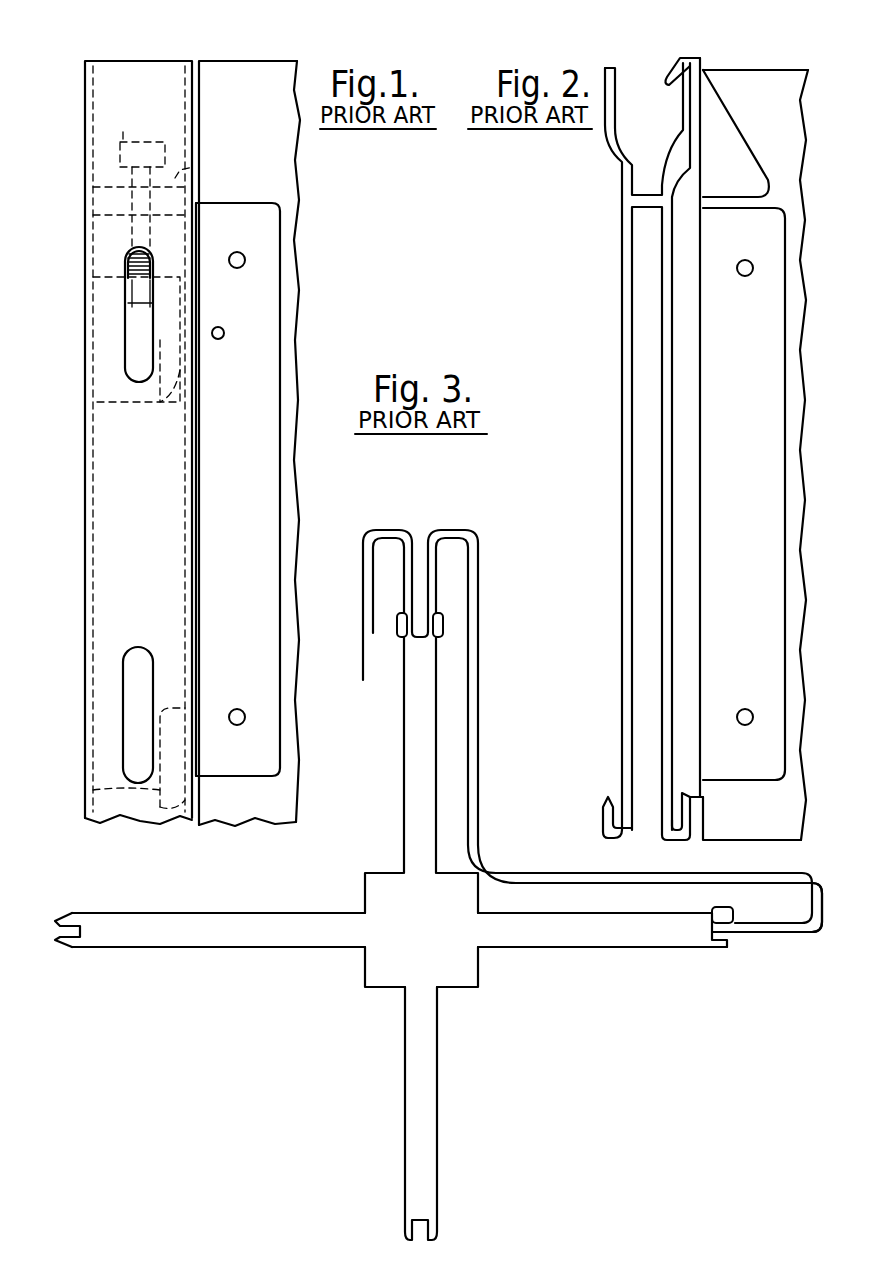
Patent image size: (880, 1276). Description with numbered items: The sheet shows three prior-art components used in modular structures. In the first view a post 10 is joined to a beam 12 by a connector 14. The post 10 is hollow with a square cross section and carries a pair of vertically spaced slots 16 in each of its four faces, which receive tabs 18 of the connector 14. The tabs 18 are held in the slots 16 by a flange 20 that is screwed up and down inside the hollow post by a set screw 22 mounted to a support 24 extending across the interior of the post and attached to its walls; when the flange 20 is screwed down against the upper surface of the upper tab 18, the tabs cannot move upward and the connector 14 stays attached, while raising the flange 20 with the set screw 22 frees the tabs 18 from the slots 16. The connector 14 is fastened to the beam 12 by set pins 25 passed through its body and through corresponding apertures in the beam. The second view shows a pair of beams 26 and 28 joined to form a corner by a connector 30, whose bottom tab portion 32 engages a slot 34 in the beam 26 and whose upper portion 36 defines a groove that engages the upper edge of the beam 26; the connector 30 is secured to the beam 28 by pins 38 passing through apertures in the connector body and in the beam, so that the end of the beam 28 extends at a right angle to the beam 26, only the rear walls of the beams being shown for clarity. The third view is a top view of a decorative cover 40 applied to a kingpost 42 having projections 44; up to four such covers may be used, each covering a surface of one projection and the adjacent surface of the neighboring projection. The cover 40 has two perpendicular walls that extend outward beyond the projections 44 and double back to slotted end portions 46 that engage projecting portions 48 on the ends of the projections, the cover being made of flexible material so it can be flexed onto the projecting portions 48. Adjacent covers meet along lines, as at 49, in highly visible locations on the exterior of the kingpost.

In FIG. 1, the post 10 is at (85, 463).
In FIG. 1, the beam 12 is at (299, 167).
In FIG. 1, the connector 14 is at (268, 225).
In FIG. 1, the slots 16 is at (132, 345).
In FIG. 1, the tabs 18 is at (93, 400).
In FIG. 1, the flange 20 is at (140, 303).
In FIG. 1, the set screw 22 is at (123, 132).
In FIG. 1, the support 24 is at (193, 167).
In FIG. 1, the set pins 25 is at (245, 261).
In FIG. 2, the beam 26 is at (620, 303).
In FIG. 2, the beam 28 is at (793, 127).
In FIG. 2, the connector 30 is at (773, 243).
In FIG. 2, the bottom tab portion 32 is at (680, 815).
In FIG. 2, the slot 34 is at (675, 826).
In FIG. 2, the upper portion 36 is at (680, 57).
In FIG. 2, the pins 38 is at (753, 268).
In FIG. 3, the decorative cover 40 is at (364, 658).
In FIG. 3, the kingpost 42 is at (365, 990).
In FIG. 3, the projections 44 is at (405, 846).
In FIG. 3, the end portions 46 is at (397, 627).
In FIG. 3, the projecting portions 48 is at (403, 613).
In FIG. 3, the lines 49 is at (818, 935).